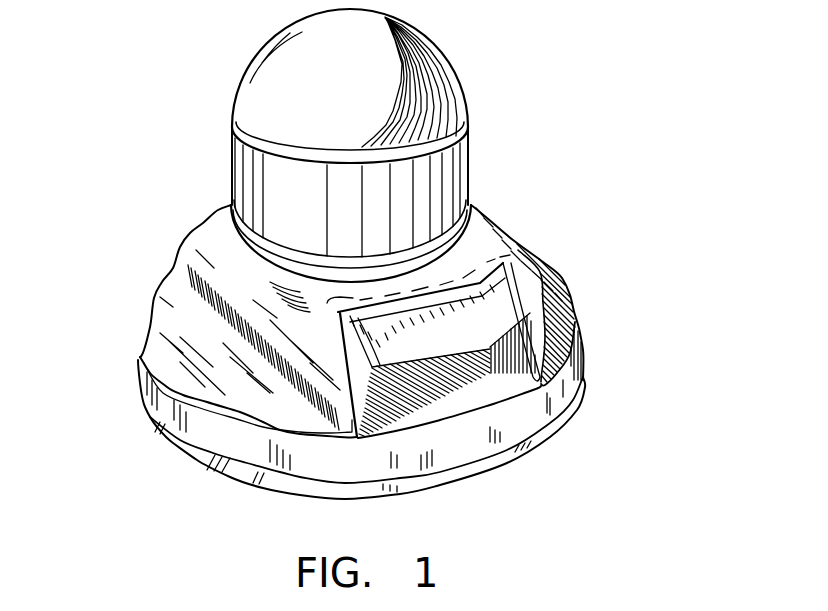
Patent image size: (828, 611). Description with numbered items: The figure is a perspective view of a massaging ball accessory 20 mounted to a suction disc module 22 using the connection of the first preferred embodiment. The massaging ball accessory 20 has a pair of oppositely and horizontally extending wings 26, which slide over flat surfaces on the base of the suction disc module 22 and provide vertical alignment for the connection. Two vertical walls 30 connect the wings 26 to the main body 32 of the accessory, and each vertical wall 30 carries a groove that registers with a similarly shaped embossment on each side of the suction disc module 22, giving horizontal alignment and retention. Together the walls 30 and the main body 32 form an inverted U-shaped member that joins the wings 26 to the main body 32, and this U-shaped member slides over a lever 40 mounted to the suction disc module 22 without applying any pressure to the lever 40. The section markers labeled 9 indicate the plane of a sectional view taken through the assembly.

The massaging ball accessory 20 is at (467, 132).
The suction disc module 22 is at (528, 424).
The wings 26 is at (158, 327).
The vertical walls 30 is at (546, 343).
The main body 32 is at (458, 271).
The lever 40 is at (493, 330).
The section line 9- 9 is at (102, 167).